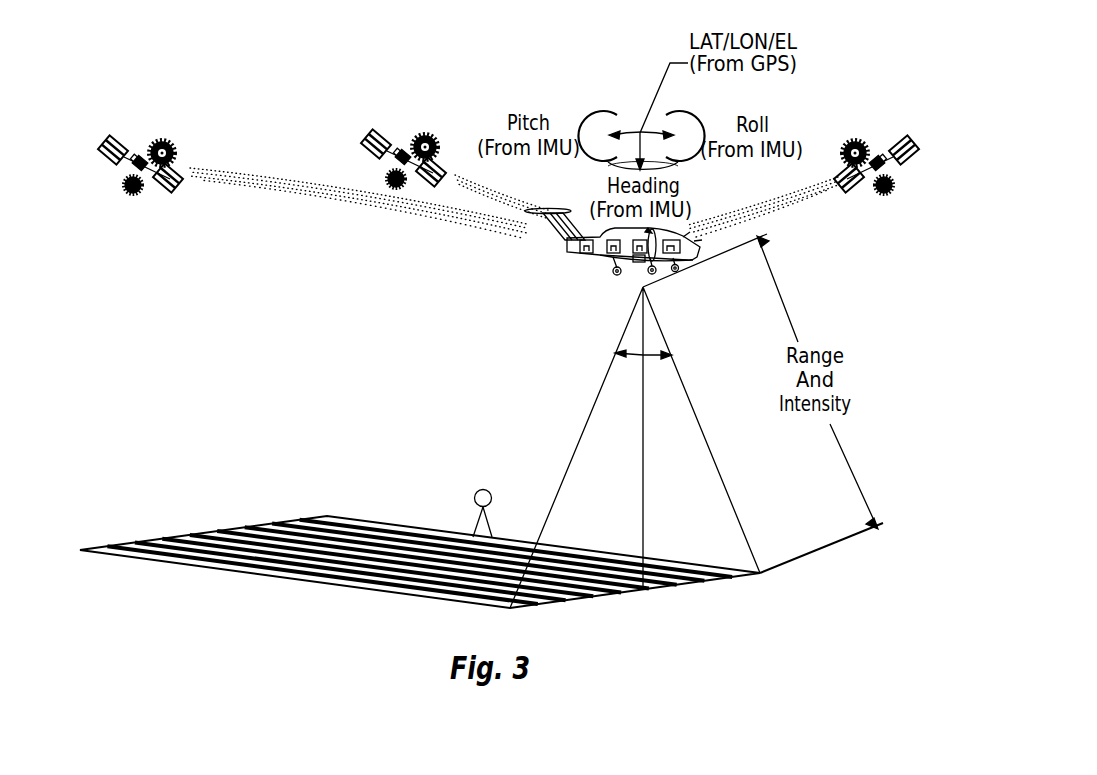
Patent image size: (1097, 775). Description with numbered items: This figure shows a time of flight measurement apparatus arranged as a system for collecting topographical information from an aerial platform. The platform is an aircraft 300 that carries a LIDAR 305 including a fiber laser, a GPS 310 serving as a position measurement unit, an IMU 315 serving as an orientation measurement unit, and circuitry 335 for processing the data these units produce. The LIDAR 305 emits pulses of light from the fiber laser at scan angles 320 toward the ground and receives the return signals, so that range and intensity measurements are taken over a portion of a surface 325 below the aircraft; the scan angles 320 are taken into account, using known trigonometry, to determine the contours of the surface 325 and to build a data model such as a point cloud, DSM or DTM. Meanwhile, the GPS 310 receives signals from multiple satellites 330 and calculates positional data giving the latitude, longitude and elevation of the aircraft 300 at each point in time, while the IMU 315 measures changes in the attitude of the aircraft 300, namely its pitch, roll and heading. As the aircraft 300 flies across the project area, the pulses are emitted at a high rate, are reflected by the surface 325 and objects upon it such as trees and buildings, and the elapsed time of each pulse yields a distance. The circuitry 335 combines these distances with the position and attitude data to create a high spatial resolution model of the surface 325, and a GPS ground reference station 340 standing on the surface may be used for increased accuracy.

The aircraft 300 is at (595, 269).
The LIDAR 305 is at (612, 266).
The GPS 310 is at (640, 263).
The IMU 315 is at (685, 261).
The scan angles 320 is at (619, 353).
The surface 325 is at (323, 585).
The satellites 330 is at (123, 140).
The circuitry 335 is at (587, 258).
The GPS ground reference station 340 is at (482, 489).